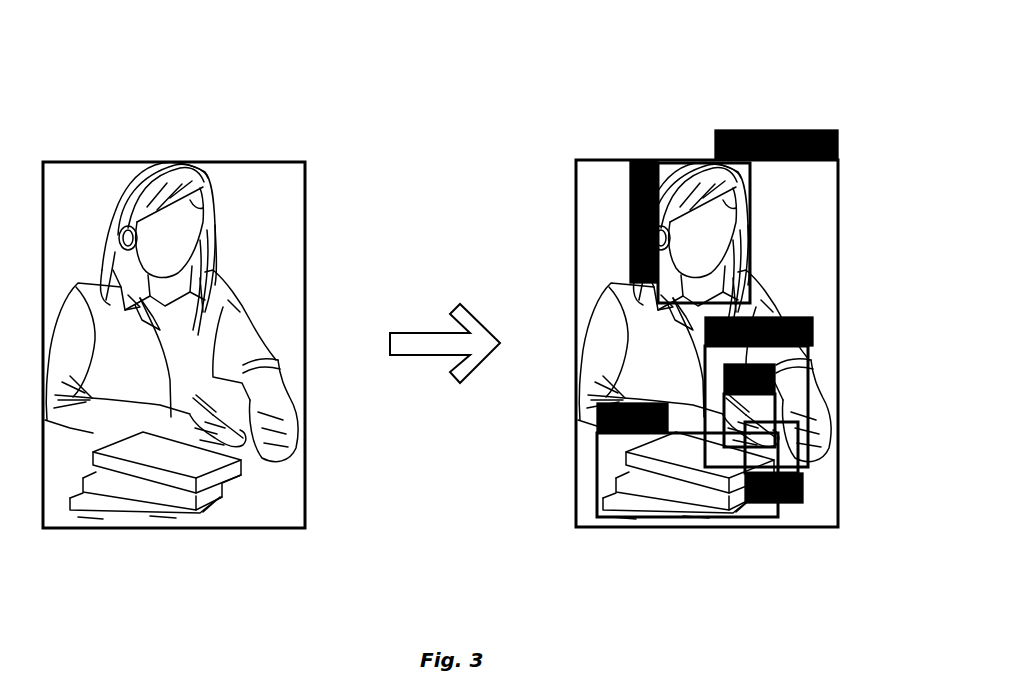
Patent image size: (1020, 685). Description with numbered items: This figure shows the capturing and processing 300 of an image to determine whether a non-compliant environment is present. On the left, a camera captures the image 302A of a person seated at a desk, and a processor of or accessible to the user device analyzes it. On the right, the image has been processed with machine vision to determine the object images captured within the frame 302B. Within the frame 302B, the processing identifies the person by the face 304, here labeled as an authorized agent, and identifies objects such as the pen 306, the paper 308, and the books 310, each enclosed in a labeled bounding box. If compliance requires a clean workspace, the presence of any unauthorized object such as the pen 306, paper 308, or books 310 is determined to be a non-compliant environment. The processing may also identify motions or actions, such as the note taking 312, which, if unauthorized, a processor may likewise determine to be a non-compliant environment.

The capturing and processing 300 is at (907, 58).
The image 302A is at (213, 162).
The frame 302B is at (610, 160).
The face 304 is at (745, 237).
The pen 306 is at (775, 401).
The paper 308 is at (795, 457).
The books 310 is at (597, 465).
The note taking 312 is at (810, 353).